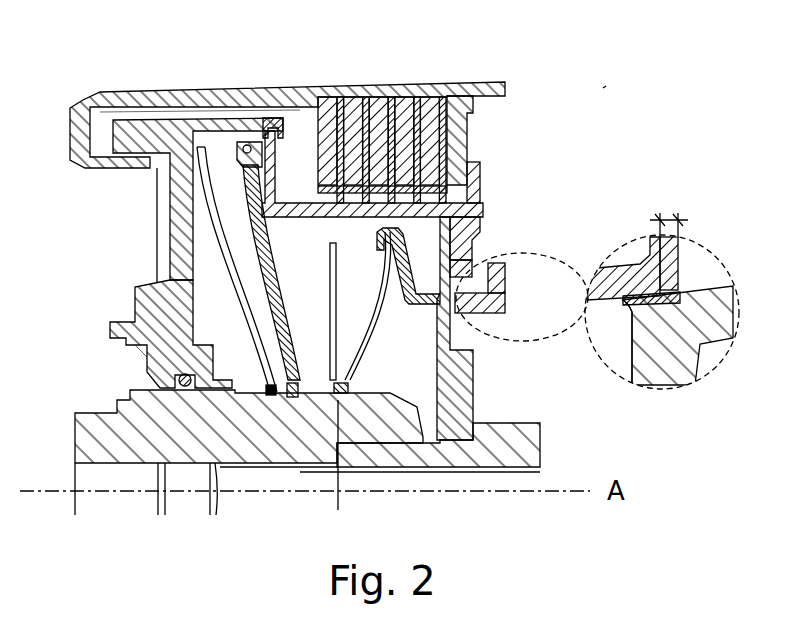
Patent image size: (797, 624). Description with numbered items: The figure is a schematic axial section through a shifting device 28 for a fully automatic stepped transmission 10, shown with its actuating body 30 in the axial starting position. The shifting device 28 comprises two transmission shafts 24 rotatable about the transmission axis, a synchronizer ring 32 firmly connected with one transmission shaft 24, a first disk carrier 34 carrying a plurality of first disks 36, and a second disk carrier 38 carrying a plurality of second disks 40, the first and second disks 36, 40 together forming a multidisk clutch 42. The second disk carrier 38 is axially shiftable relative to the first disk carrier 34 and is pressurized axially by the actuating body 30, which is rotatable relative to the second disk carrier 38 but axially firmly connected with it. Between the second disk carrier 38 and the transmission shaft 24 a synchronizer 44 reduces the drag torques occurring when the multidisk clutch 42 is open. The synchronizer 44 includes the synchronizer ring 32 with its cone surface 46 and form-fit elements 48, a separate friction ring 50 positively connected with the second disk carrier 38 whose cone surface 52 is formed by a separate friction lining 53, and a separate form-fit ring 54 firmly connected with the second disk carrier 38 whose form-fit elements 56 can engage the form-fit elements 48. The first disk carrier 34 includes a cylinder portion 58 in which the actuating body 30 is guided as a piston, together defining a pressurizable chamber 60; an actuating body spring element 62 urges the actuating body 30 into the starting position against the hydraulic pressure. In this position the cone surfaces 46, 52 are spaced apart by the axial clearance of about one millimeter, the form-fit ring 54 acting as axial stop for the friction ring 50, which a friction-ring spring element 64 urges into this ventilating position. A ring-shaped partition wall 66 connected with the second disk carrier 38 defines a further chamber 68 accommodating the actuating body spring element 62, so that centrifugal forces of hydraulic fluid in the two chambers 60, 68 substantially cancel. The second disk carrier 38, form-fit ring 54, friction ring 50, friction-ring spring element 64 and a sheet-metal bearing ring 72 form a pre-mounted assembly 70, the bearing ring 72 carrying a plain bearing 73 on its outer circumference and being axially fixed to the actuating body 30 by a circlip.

The fully automatic stepped transmission 10 is at (603, 88).
The shifting device 28 is at (652, 59).
The transmission shaft 24 is at (127, 445).
The actuating body 30 is at (185, 235).
The synchronizer ring 32 is at (482, 305).
The first disk carrier 34 is at (330, 98).
The first disks 36 is at (380, 98).
The second disk carrier 38 is at (470, 210).
The second disks 40 is at (460, 137).
The multidisk clutch 42 is at (505, 108).
The synchronizer 44 is at (492, 226).
The cone surface 46 is at (690, 290).
The form-fit elements 48 is at (493, 270).
The friction ring 50 is at (417, 298).
The cone surface 52 is at (625, 332).
The friction lining 53 is at (640, 280).
The form-fit ring 54 is at (478, 182).
The form-fit elements 56 is at (463, 266).
The cylinder portion 58 is at (197, 108).
The pressurizable chamber 60 is at (145, 357).
The actuating body spring element 62 is at (190, 303).
The friction-ring spring element 64 is at (318, 395).
The partition wall 66 is at (252, 188).
The further chamber 68 is at (262, 445).
The pre-mounted assembly 70 is at (410, 416).
The bearing ring 72 is at (338, 418).
The plain bearing 73 is at (272, 117).